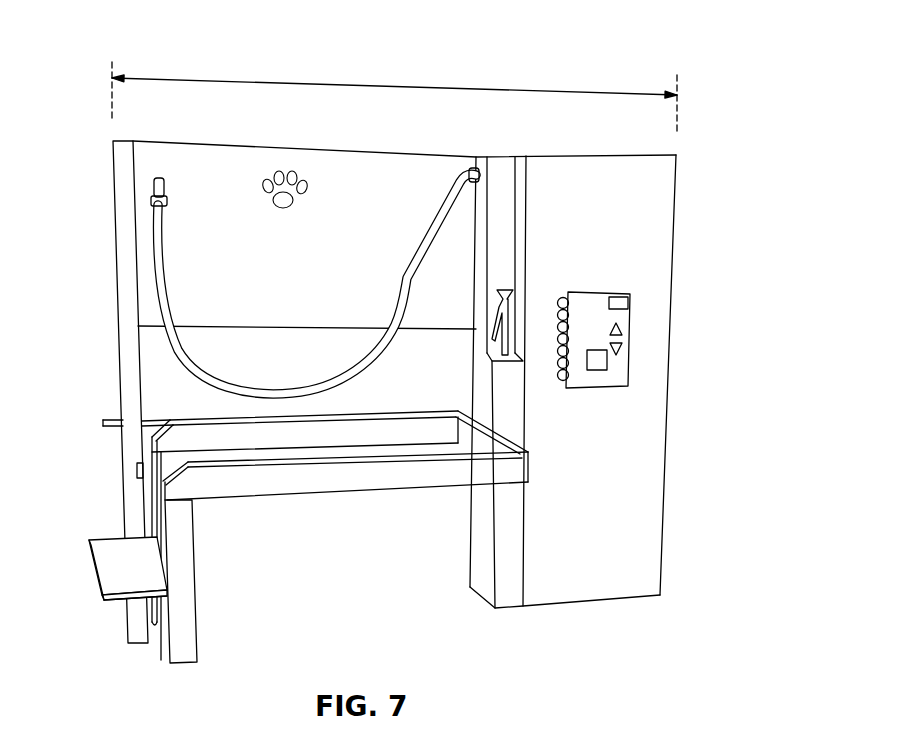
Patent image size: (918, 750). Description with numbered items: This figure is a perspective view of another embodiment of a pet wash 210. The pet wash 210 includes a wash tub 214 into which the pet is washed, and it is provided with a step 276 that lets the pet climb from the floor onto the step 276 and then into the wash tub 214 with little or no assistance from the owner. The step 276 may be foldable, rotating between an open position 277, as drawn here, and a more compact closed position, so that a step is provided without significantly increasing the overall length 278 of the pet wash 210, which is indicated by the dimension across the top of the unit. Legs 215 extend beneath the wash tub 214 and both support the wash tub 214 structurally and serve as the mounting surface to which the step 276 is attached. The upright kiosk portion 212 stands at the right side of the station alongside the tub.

The pet wash 210 is at (416, 359).
The control kiosk / panel 212 is at (653, 303).
The wash tub 214 is at (392, 473).
The legs 215 is at (158, 624).
The step 276 is at (117, 553).
The open position 277 is at (93, 585).
The overall length 278 is at (447, 90).